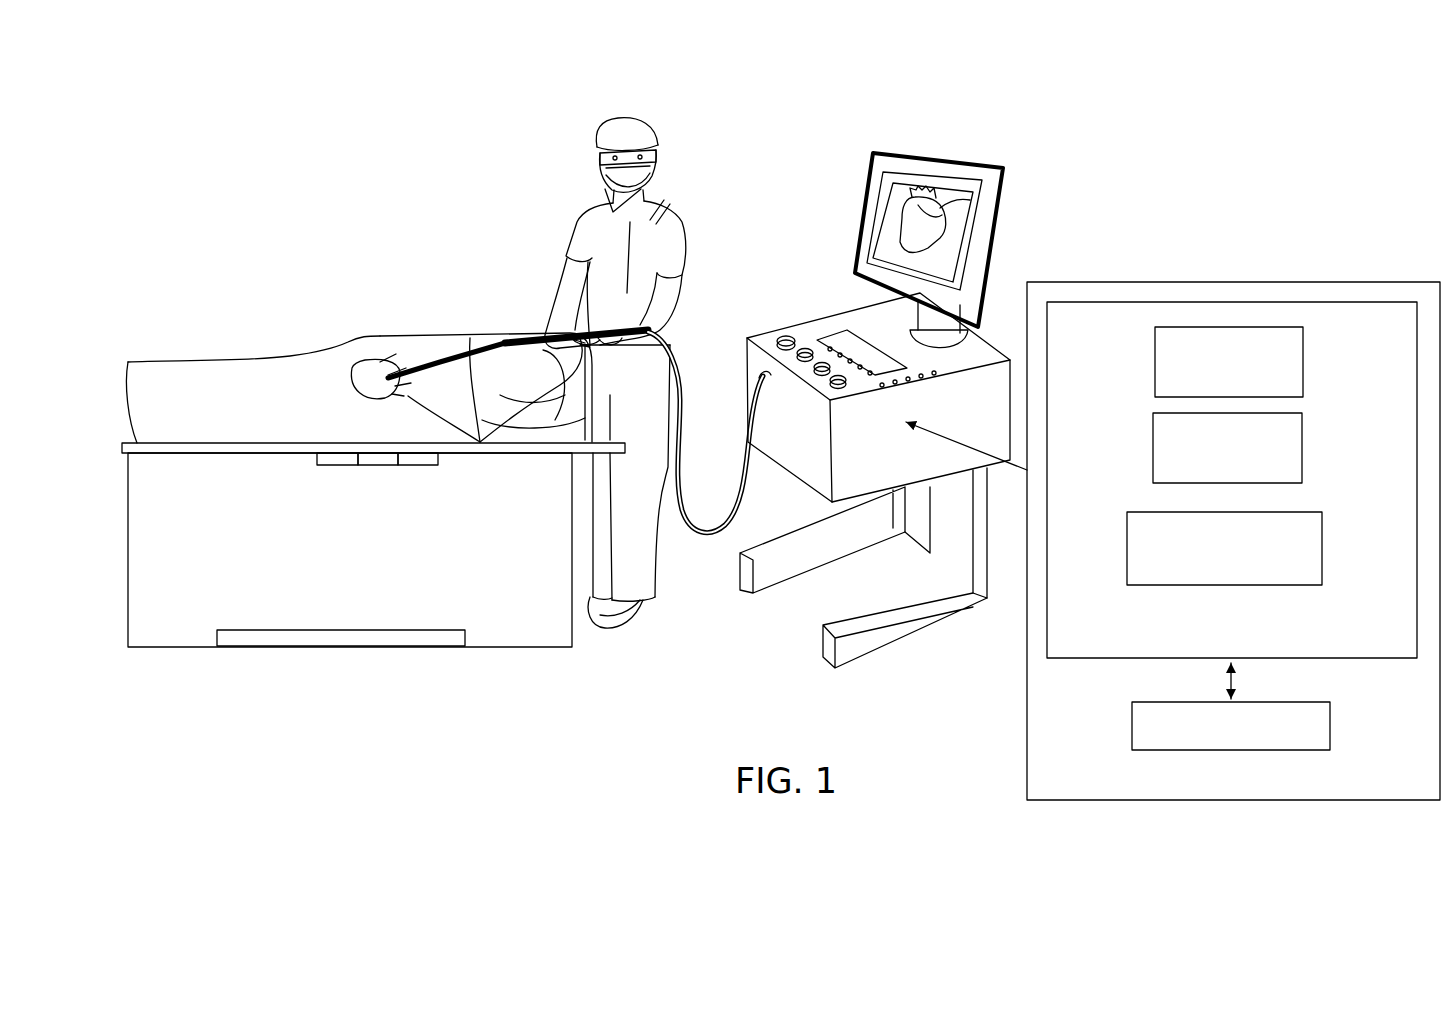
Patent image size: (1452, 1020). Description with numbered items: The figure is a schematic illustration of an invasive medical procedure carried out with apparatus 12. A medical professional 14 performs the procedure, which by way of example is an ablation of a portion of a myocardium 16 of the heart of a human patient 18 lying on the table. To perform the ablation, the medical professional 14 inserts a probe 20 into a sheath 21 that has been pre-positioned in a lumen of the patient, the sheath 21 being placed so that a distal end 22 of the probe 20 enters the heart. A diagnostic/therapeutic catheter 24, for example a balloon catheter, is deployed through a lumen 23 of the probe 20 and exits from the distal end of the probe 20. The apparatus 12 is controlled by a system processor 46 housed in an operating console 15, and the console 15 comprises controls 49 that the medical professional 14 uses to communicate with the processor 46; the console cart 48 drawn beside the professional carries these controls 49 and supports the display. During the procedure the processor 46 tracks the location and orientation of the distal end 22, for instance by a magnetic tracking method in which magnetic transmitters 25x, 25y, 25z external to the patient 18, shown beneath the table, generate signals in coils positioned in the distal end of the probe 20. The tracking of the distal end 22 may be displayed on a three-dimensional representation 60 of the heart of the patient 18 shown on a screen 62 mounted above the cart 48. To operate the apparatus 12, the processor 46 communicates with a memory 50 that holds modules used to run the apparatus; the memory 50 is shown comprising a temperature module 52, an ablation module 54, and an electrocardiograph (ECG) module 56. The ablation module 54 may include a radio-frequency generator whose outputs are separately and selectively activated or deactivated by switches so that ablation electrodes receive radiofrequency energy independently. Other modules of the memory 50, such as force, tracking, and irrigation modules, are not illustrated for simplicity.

The apparatus 12 is at (786, 122).
The medical professional 14 is at (627, 122).
The operating console 15 is at (1236, 282).
The myocardium 16 is at (352, 375).
The human patient 18 is at (177, 378).
The probe 20 is at (490, 345).
The sheath 21 is at (423, 352).
The distal end 22 is at (375, 316).
The lumen 23 is at (409, 278).
The diagnostic/therapeutic catheter 24 is at (320, 316).
The magnetic transmitter 25x is at (335, 463).
The magnetic transmitter 25y is at (378, 466).
The magnetic transmitter 25z is at (420, 463).
The system processor 46 is at (1330, 727).
The console cart 48 is at (825, 325).
The controls 49 is at (789, 335).
The memory 50 is at (1068, 658).
The temperature module 52 is at (1322, 552).
The ablation module 54 is at (1302, 450).
The electrocardiograph (ECG) module 56 is at (1303, 364).
The three-dimensional representation 60 is at (905, 228).
The screen 62 is at (906, 160).